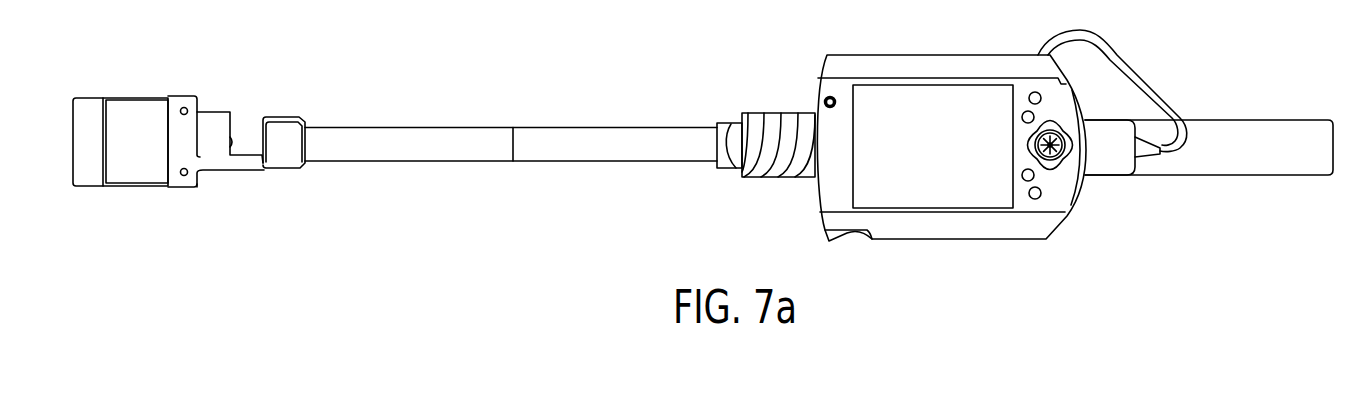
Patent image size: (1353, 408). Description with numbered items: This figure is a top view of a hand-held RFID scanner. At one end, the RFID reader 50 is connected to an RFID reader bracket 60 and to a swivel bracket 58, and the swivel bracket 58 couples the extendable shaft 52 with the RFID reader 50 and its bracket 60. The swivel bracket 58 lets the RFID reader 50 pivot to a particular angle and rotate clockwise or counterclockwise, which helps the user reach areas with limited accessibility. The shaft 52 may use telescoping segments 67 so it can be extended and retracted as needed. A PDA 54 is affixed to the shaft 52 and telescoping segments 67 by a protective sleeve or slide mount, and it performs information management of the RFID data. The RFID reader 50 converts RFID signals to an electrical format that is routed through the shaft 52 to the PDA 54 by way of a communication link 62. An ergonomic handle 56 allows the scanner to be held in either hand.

The RFID reader 50 is at (121, 98).
The shaft 52 is at (402, 127).
The PDA 54 is at (1087, 198).
The handle 56 is at (1225, 177).
The swivel bracket 58 is at (283, 170).
The RFID reader bracket 60 is at (178, 187).
The communication link 62 is at (1147, 80).
The telescoping segments 67 is at (727, 170).